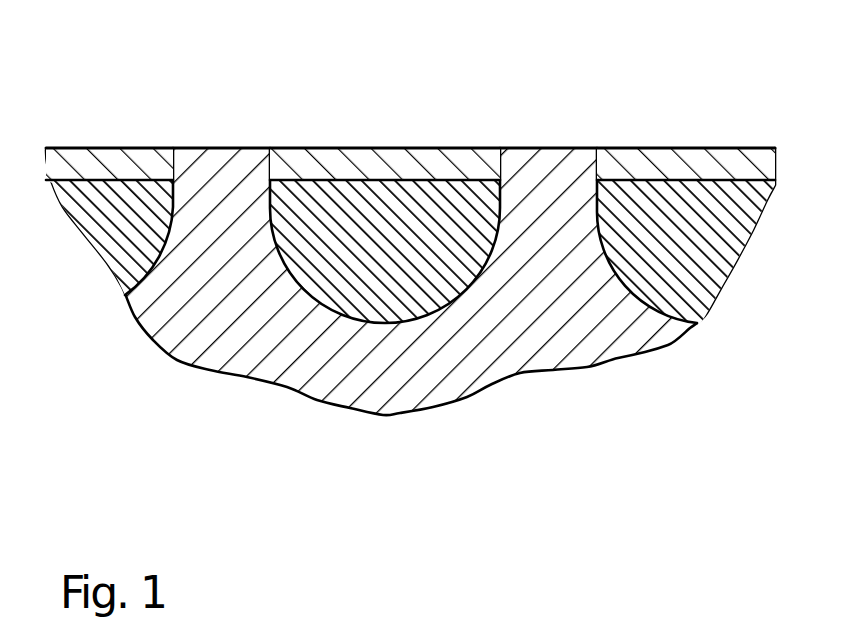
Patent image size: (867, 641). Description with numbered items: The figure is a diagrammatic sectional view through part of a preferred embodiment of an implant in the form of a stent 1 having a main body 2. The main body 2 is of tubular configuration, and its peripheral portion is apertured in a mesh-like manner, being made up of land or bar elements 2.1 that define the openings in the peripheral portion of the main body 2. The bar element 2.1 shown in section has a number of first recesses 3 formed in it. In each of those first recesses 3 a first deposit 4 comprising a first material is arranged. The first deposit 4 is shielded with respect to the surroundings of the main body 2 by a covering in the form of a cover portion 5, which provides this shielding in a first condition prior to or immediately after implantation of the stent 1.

The stent 1 is at (630, 134).
The main body 2 is at (410, 328).
The bar element 2.1 is at (272, 328).
The first recess 3 is at (503, 227).
The first deposit 4 is at (385, 237).
The cover portion 5 is at (423, 173).